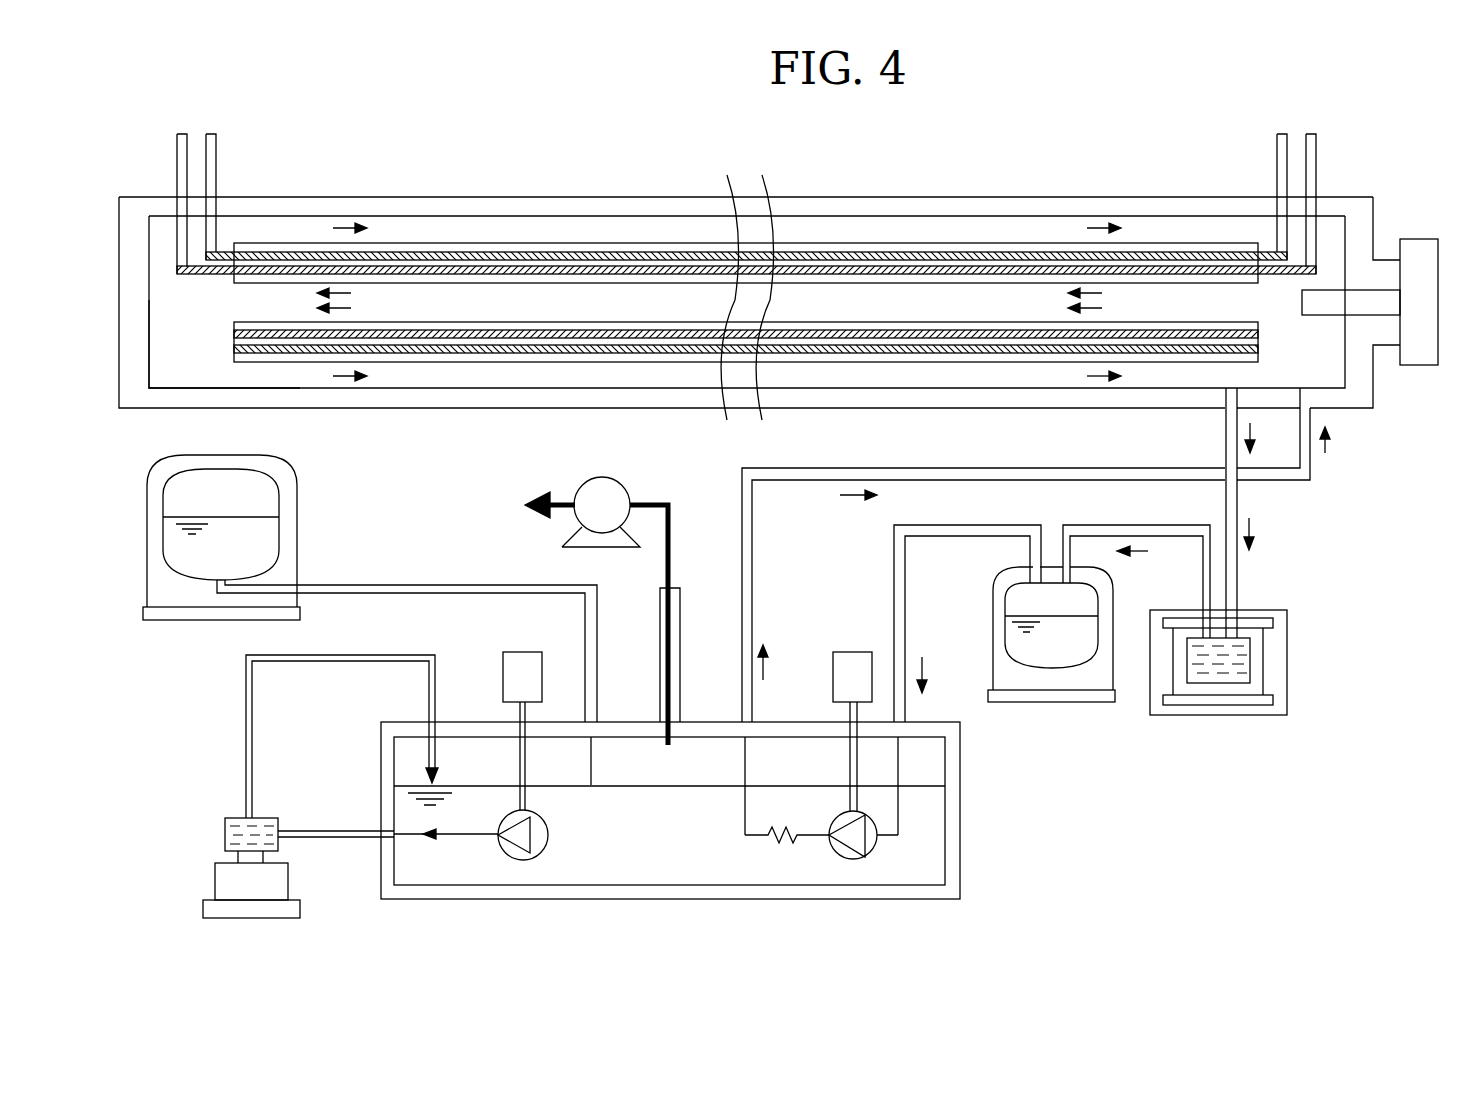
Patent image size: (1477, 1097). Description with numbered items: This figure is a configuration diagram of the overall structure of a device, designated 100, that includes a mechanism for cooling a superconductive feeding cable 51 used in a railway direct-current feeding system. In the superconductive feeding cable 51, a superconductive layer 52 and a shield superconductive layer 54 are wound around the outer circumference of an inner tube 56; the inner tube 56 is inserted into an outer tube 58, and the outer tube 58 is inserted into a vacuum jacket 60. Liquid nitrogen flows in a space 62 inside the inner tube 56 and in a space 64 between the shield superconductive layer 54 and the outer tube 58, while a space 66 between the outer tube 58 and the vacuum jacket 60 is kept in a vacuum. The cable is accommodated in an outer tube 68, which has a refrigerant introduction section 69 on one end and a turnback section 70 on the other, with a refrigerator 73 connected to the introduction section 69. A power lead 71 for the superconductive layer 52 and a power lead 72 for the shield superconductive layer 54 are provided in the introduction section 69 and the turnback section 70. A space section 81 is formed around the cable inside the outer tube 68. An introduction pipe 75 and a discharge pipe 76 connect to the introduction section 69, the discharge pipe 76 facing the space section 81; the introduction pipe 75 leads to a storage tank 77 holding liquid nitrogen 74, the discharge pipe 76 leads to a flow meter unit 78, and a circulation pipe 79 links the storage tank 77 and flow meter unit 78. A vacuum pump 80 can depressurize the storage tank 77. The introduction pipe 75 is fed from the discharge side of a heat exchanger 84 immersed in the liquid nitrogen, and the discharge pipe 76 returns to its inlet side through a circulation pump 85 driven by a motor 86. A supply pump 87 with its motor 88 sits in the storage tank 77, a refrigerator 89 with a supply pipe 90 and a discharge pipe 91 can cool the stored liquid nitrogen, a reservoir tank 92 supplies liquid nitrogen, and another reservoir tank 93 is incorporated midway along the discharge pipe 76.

The superconductive feeding cable 51 is at (650, 192).
The superconductive layer 52 is at (855, 268).
The shield superconductive layer 54 is at (892, 253).
The inner tube 56 is at (810, 277).
The outer tube 58 is at (928, 215).
The vacuum jacket 60 is at (973, 197).
The space 62 is at (466, 302).
The space 64 is at (534, 373).
The space 66 is at (1088, 210).
The outer tube 68 is at (1373, 380).
The refrigerant introduction section 69 is at (1335, 375).
The turnback section 70 is at (188, 378).
The power lead 71 is at (177, 150).
The power lead 72 is at (216, 150).
The refrigerator 73 is at (1417, 239).
The liquid nitrogen 74 is at (670, 885).
The introduction pipe 75 is at (903, 468).
The discharge pipe 76 is at (1237, 577).
The storage tank 77 is at (960, 803).
The flow meter unit 78 is at (1287, 662).
The circulation pipe 79 is at (940, 562).
The vacuum pump 80 is at (608, 482).
The space section 81 is at (1034, 216).
The heat exchanger 84 is at (789, 845).
The circulation pump 85 is at (851, 850).
The motor 86 is at (852, 652).
The supply pump 87 is at (523, 850).
The motor 88 is at (524, 652).
The refrigerator 89 is at (275, 882).
The supply pipe 90 is at (330, 655).
The discharge pipe 91 is at (333, 831).
The reservoir tank 92 is at (285, 503).
The reservoir tank 93 is at (1092, 678).
The ozone generating system 100 is at (1167, 815).